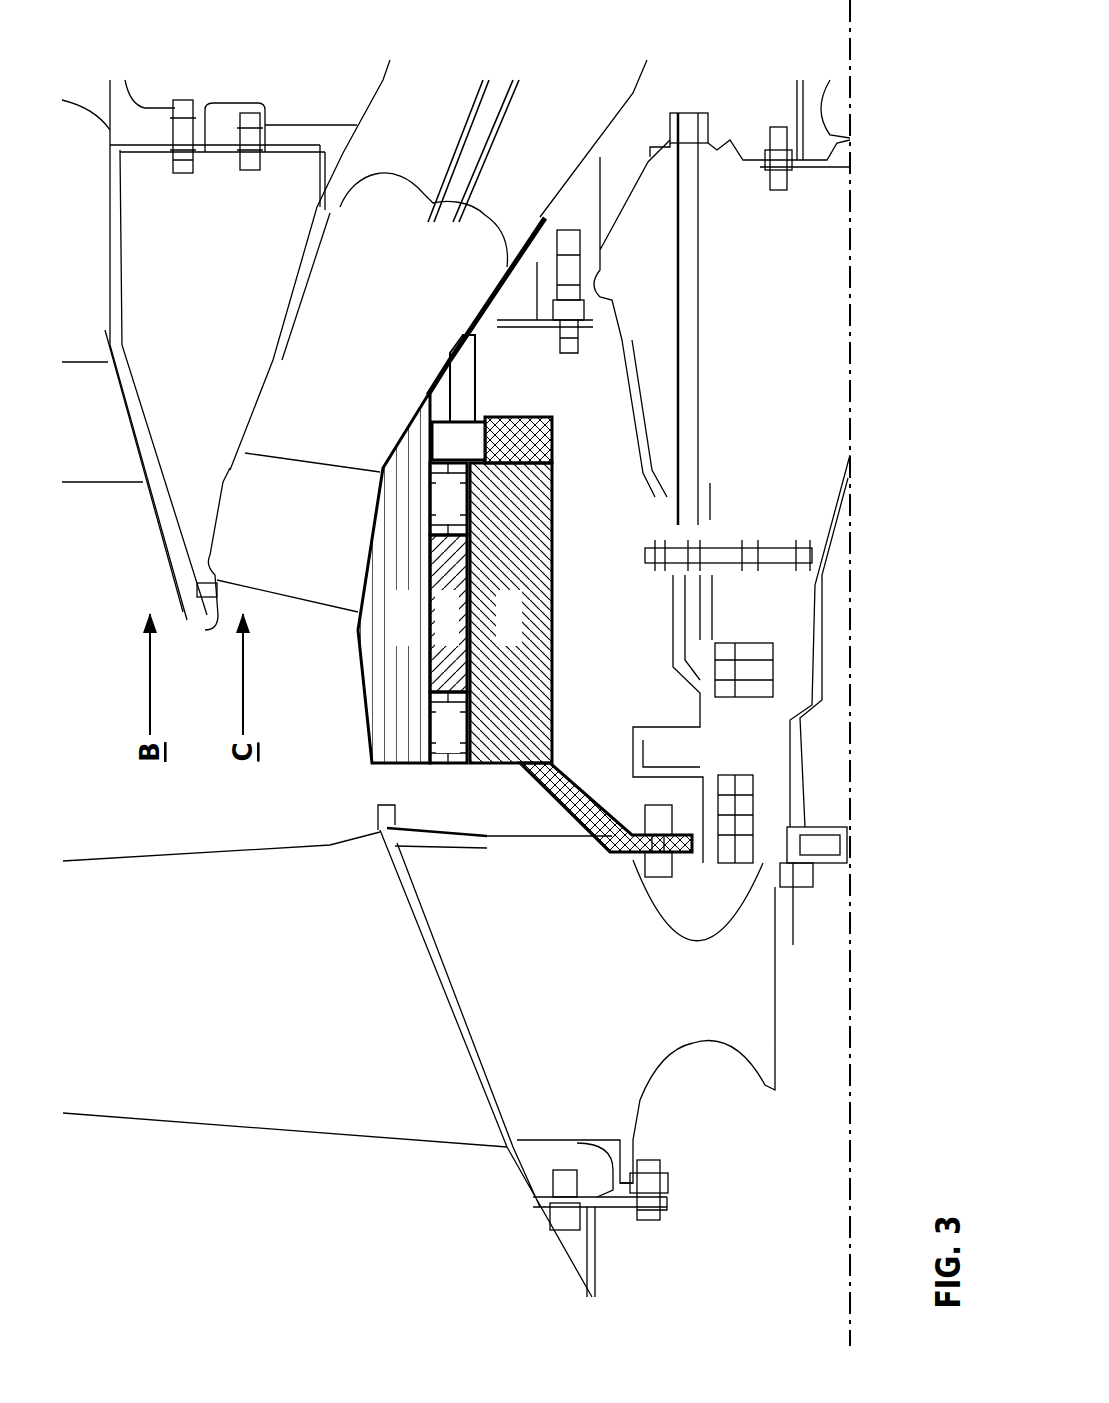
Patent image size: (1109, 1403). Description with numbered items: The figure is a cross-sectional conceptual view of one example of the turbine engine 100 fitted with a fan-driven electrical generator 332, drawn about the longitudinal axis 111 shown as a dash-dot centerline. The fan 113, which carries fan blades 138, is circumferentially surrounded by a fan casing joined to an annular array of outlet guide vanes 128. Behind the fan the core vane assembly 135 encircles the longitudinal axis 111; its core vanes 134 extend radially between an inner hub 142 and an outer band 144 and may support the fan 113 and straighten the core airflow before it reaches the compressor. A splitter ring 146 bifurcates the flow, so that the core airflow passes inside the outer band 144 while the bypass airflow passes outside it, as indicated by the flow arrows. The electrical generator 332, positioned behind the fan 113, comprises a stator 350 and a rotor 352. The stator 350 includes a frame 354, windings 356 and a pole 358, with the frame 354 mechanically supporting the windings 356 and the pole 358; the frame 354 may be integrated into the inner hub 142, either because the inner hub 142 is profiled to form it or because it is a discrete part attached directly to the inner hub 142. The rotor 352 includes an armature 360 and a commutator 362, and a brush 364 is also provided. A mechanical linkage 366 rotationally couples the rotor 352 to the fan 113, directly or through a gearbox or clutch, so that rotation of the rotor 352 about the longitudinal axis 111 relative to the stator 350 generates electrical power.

The turbine engine 100 is at (88, 1268).
The longitudinal axis 111 is at (850, 1346).
The fan 113 is at (338, 1265).
The outlet guide vanes 128 is at (107, 473).
The core vanes 134 is at (312, 582).
The core vane assembly 135 is at (306, 644).
The fan blades 138 is at (285, 1112).
The inner hub 142 is at (382, 470).
The outer band 144 is at (223, 480).
The splitter ring 146 is at (203, 623).
The electrical generator 332 is at (474, 806).
The stator 350 is at (499, 620).
The rotor 352 is at (578, 540).
The frame 354 is at (394, 579).
The windings 356 is at (448, 613).
The pole 358 is at (448, 613).
The armature 360 is at (511, 613).
The commutator 362 is at (547, 440).
The brush 364 is at (457, 437).
The mechanical linkage 366 is at (627, 838).